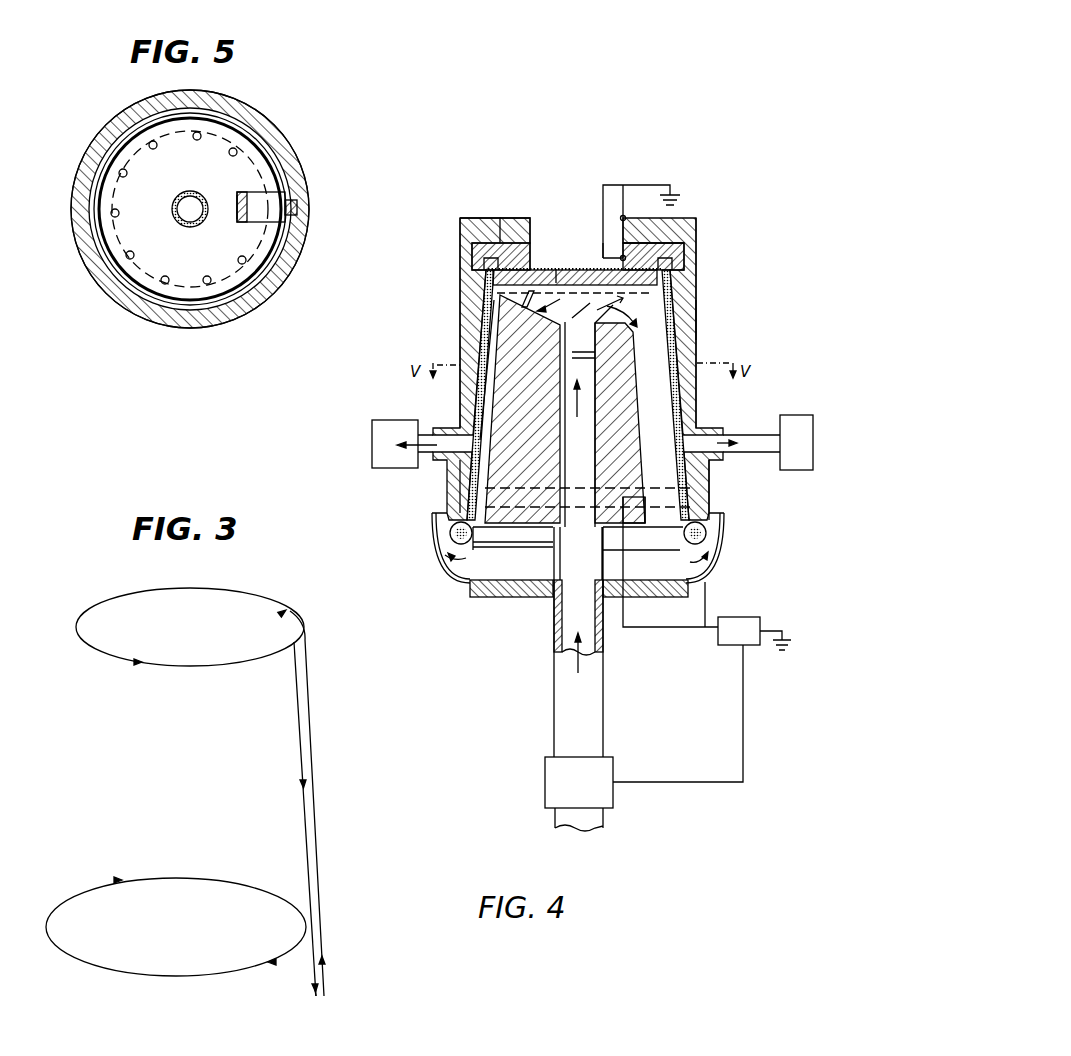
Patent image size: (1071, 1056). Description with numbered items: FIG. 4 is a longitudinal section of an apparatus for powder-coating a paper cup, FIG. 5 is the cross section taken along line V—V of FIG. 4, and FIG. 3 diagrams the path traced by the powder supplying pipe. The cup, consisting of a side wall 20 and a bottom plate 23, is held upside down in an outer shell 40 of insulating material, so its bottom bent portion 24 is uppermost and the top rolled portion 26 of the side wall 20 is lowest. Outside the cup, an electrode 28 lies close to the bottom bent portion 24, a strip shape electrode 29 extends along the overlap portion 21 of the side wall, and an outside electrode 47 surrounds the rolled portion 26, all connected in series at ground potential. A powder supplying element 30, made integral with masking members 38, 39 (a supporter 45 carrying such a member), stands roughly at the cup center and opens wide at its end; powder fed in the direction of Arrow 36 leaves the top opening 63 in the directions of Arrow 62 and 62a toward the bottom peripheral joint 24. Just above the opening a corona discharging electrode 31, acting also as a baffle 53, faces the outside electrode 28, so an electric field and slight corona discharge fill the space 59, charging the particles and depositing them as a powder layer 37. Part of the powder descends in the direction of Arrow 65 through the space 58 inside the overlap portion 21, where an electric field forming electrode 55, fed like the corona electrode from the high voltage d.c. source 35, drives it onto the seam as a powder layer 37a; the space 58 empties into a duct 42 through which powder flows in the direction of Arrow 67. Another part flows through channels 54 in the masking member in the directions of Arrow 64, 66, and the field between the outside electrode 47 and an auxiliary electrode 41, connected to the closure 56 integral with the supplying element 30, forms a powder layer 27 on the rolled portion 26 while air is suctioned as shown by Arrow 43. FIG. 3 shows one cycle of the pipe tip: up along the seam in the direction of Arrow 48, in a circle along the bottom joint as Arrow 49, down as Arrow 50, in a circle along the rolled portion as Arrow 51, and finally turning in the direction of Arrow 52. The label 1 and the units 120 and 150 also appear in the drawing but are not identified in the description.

In FIG. 5, the rotary atomizer head 1 is at (250, 130).
In FIG. 4, the side wall 20 is at (483, 330).
In FIG. 5, the overlap portion of the side wall 21 is at (297, 230).
In FIG. 4, the overlap portion of the side wall 21 is at (696, 317).
In FIG. 4, the bottom plate 23 is at (570, 268).
In FIG. 4, the bottom bent portion 24 is at (680, 246).
In FIG. 4, the top open rolled portion 26 is at (450, 532).
In FIG. 4, the powder layer 27 is at (443, 540).
In FIG. 4, the electrode 28 is at (640, 240).
In FIG. 5, the strip shape electrode 29 is at (287, 170).
In FIG. 4, the strip shape electrode 29 is at (684, 390).
In FIG. 5, the powder supplying pipe 30 is at (192, 203).
In FIG. 4, the powder supplying pipe 30 is at (572, 622).
In FIG. 4, the corona discharging electrode 31 is at (600, 303).
In FIG. 4, the high voltage d.c. source 35 is at (732, 640).
In FIG. 4, the arrow 36 is at (577, 660).
In FIG. 4, the powder layer 37 is at (472, 268).
In FIG. 4, the powder layer 37a is at (670, 343).
In FIG. 4, the masking member 38 is at (577, 282).
In FIG. 5, the masking member 39 is at (187, 280).
In FIG. 4, the masking member 39 is at (512, 397).
In FIG. 5, the outer shell 40 is at (84, 168).
In FIG. 4, the outer shell 40 is at (687, 218).
In FIG. 4, the auxiliary electrode 41 is at (722, 532).
In FIG. 4, the duct 42 is at (710, 455).
In FIG. 4, the arrow 43 is at (725, 438).
In FIG. 4, the supporter 45 is at (518, 221).
In FIG. 4, the outside electrode 47 is at (460, 493).
In FIG. 3, the arrow 48 is at (314, 824).
In FIG. 3, the arrow 49 is at (200, 587).
In FIG. 3, the arrow 50 is at (302, 757).
In FIG. 3, the arrow 51 is at (228, 976).
In FIG. 3, the arrow 52 is at (310, 968).
In FIG. 4, the baffle 53 is at (572, 355).
In FIG. 5, the channels 54 is at (162, 281).
In FIG. 4, the channels 54 is at (497, 375).
In FIG. 5, the electric field forming electrode 55 is at (248, 192).
In FIG. 4, the electric field forming electrode 55 is at (665, 412).
In FIG. 4, the closure 56 is at (532, 597).
In FIG. 5, the space 58 is at (266, 213).
In FIG. 4, the space 58 is at (658, 472).
In FIG. 4, the space 59 is at (490, 220).
In FIG. 4, the arrow 62 is at (664, 270).
In FIG. 4, the arrow 62a is at (556, 283).
In FIG. 4, the top opening 63 is at (530, 290).
In FIG. 4, the arrow 64 is at (488, 275).
In FIG. 4, the arrow 65 is at (643, 295).
In FIG. 4, the arrow 66 is at (472, 557).
In FIG. 4, the arrow 67 is at (703, 572).
In FIG. 4, the air source 120 is at (372, 440).
In FIG. 4, the drive unit 150 is at (545, 785).